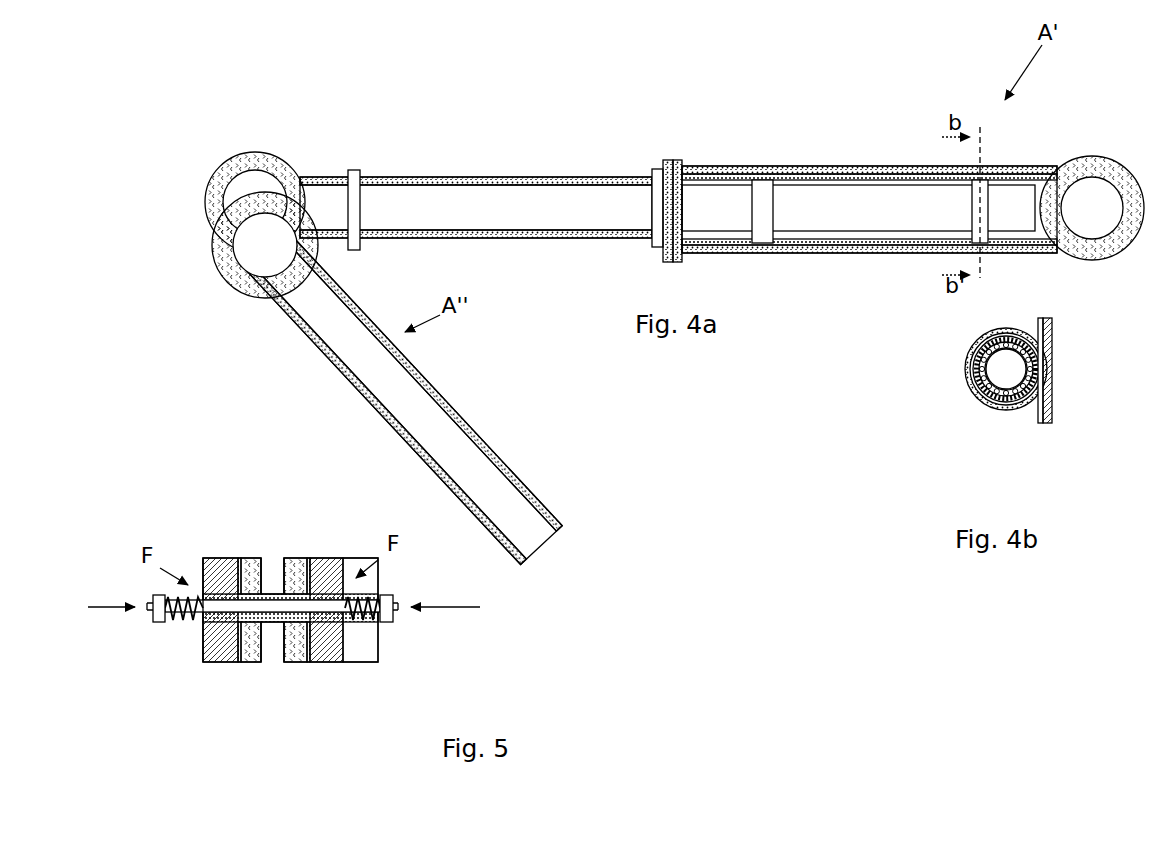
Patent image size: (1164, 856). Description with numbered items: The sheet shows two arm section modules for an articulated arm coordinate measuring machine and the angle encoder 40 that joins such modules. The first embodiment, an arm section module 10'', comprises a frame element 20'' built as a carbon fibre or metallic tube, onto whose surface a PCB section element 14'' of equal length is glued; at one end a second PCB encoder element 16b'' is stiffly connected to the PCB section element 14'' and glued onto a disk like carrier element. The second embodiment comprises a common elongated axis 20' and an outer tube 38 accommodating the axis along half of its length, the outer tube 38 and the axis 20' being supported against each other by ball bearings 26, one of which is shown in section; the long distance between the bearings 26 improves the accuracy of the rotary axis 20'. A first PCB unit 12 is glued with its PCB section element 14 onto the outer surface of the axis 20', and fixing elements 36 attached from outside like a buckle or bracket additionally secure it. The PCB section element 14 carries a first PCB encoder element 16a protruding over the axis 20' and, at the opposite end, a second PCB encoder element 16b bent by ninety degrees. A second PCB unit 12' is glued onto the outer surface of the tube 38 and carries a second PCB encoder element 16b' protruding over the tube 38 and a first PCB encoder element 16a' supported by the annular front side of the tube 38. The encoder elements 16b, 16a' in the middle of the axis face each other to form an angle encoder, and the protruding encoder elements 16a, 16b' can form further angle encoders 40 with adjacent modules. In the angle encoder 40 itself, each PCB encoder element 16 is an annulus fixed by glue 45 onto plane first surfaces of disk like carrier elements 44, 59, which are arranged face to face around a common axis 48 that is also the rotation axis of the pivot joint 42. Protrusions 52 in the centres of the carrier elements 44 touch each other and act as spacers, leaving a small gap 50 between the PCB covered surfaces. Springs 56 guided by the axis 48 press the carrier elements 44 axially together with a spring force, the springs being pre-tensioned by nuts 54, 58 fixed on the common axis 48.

In FIG. 4A, the telescopic arm section 10'' is at (454, 349).
In FIG. 4A, the first PCB unit 12 is at (476, 148).
In FIG. 4A, the second PCB unit 12' is at (869, 154).
In FIG. 4A, the PCB section element 14 is at (678, 183).
In FIG. 4B, the PCB section element 14 is at (967, 369).
In FIG. 4A, the PCB section element 14'' is at (446, 354).
In FIG. 4B, the PCB encoder element 16 is at (1050, 425).
In FIG. 4A, the first PCB encoder element 16a is at (251, 179).
In FIG. 5, the first PCB encoder element 16a is at (246, 575).
In FIG. 4A, the first PCB encoder element 16a' is at (697, 174).
In FIG. 4A, the second PCB encoder element 16b is at (649, 175).
In FIG. 5, the second PCB encoder element 16b is at (288, 560).
In FIG. 4A, the second PCB encoder element 16b' is at (1092, 183).
In FIG. 4A, the second PCB encoder element 16b'' is at (229, 260).
In FIG. 4A, the common elongated axis 20' is at (695, 158).
In FIG. 4B, the common elongated axis 20' is at (992, 407).
In FIG. 4A, the frame element 20'' is at (465, 387).
In FIG. 4A, the ball bearings 26 is at (768, 180).
In FIG. 4B, the ball bearings 26 is at (982, 390).
In FIG. 4A, the fixing elements 36 is at (362, 172).
In FIG. 4A, the outer tube 38 is at (720, 173).
In FIG. 4B, the outer tube 38 is at (972, 378).
In FIG. 4A, the angle encoder 40 is at (520, 144).
In FIG. 5, the angle encoder 40 is at (112, 524).
In FIG. 5, the joint body 42 is at (205, 530).
In FIG. 4A, the carrier elements 44 is at (652, 168).
In FIG. 4B, the carrier elements 44 is at (1041, 425).
In FIG. 5, the carrier elements 44 is at (205, 560).
In FIG. 5, the glue 45 is at (237, 557).
In FIG. 5, the common axis 48 is at (215, 665).
In FIG. 5, the gap 50 is at (275, 640).
In FIG. 5, the protrusions 52 is at (262, 640).
In FIG. 5, the nuts 54 is at (284, 607).
In FIG. 5, the springs 56 is at (180, 628).
In FIG. 5, the nut 58 is at (158, 625).
In FIG. 5, the block 59 is at (360, 557).